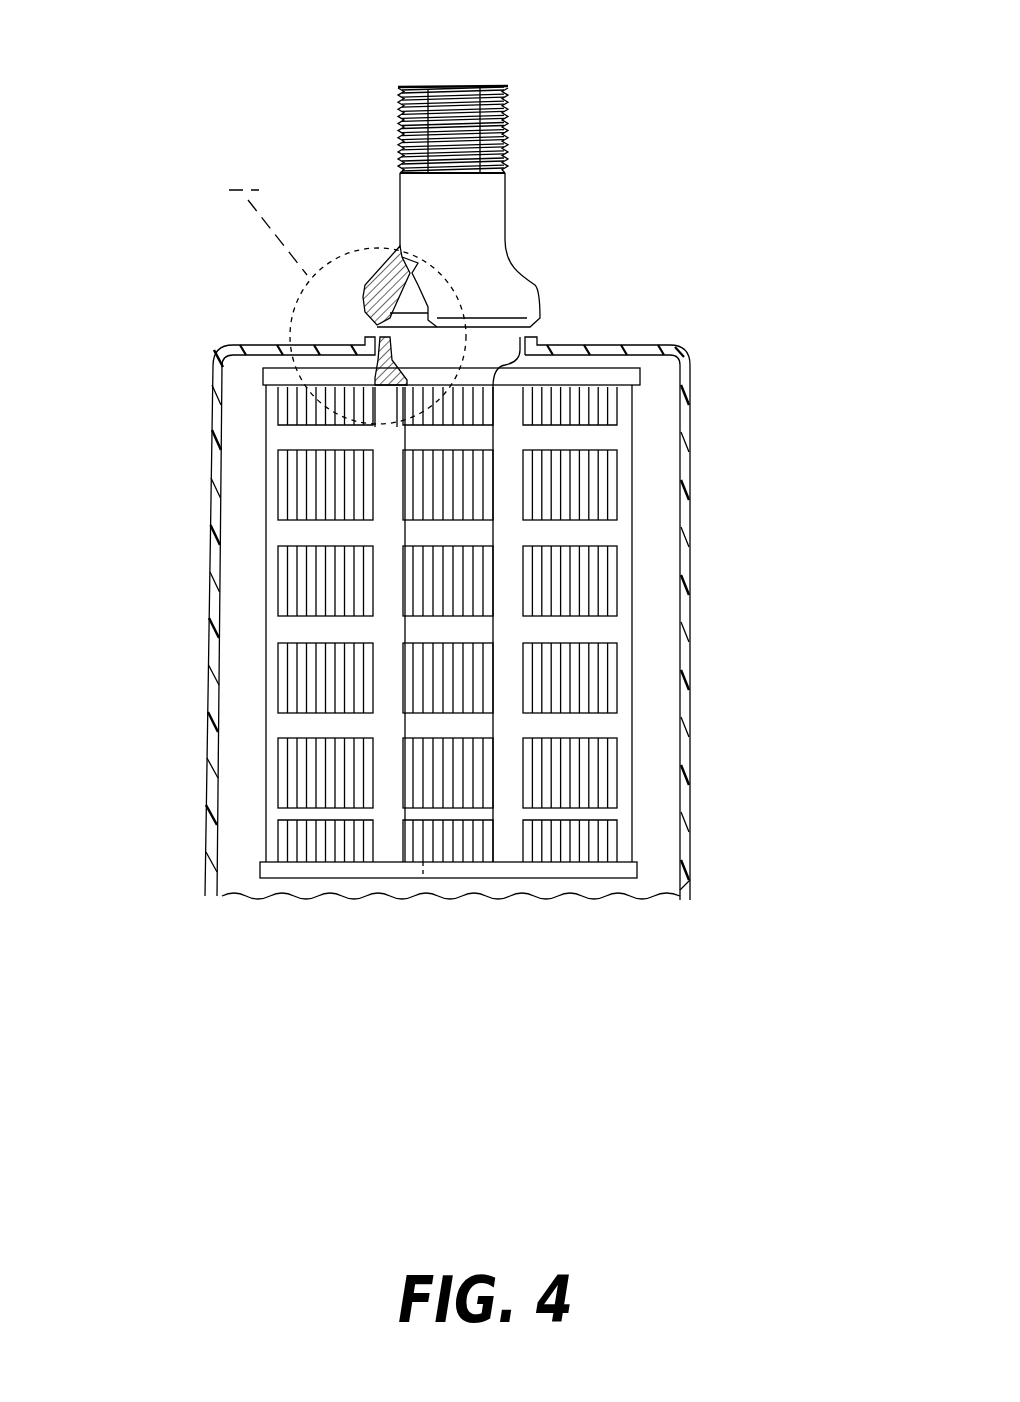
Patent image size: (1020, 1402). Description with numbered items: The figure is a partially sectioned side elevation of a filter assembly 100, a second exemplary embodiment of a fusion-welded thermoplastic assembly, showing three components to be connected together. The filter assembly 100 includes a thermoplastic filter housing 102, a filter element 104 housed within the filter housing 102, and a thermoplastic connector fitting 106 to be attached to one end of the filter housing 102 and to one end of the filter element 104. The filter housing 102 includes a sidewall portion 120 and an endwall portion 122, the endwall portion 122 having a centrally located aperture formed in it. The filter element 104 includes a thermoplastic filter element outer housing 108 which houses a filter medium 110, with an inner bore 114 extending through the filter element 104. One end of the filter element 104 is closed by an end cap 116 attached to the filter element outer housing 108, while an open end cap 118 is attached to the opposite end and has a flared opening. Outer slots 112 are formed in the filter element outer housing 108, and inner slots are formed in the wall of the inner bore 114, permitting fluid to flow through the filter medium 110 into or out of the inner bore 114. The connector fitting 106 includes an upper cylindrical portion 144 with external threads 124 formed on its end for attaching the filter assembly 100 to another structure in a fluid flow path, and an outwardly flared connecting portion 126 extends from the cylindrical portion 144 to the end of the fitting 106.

The filter assembly 100 is at (690, 205).
The filter housing 102 is at (695, 453).
The filter element 104 is at (627, 788).
The connector fitting 106 is at (508, 200).
The filter element outer housing 108 is at (632, 720).
The filter medium 110 is at (330, 838).
The outer slots 112 is at (307, 710).
The inner bore 114 is at (423, 860).
The end cap 116 is at (630, 870).
The open end cap 118 is at (637, 377).
The sidewall portion 120 is at (209, 514).
The endwall portion 122 is at (272, 343).
The external threads 124 is at (507, 98).
The outwardly flared connecting portion 126 is at (540, 293).
The upper cylindrical portion 144 is at (398, 187).